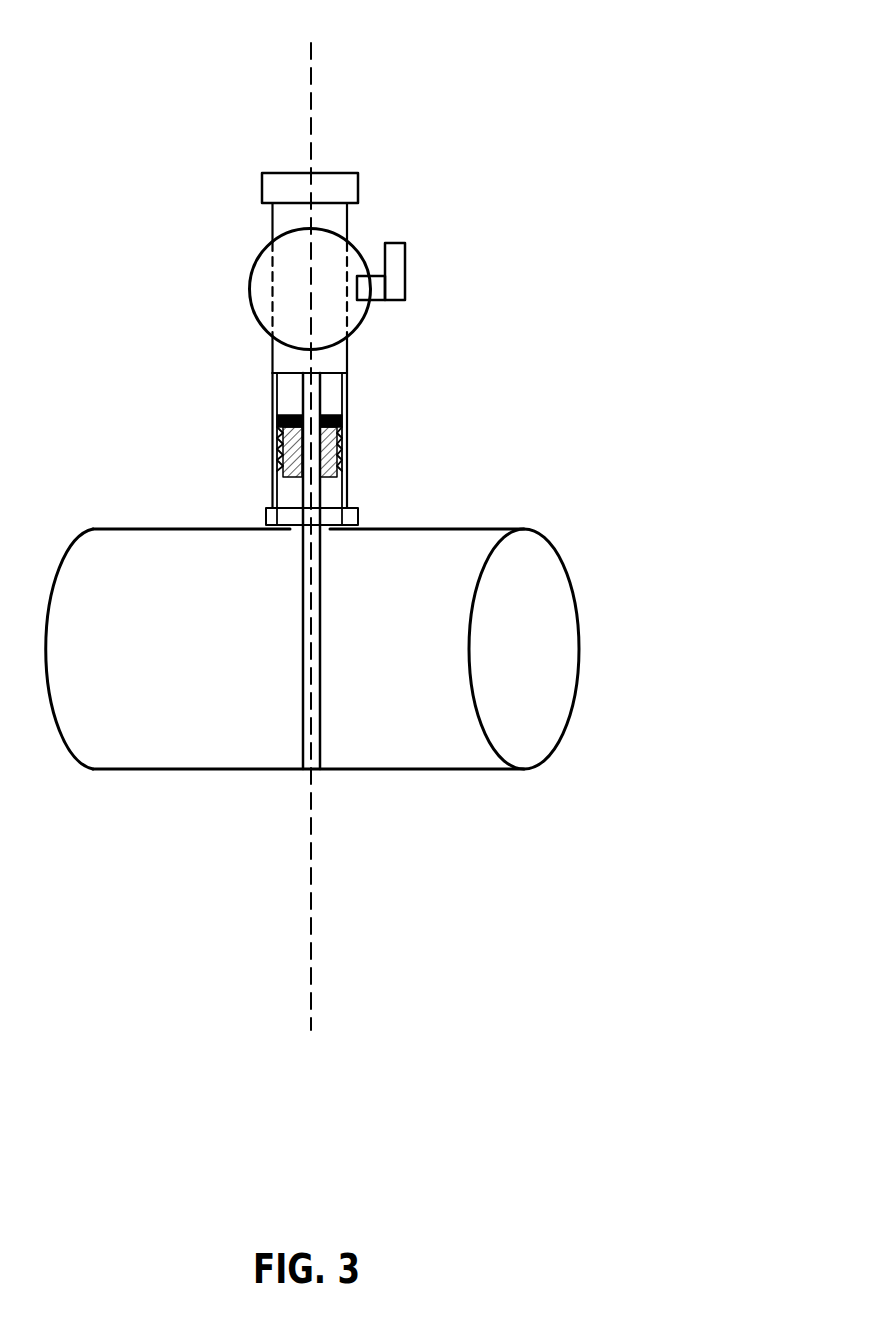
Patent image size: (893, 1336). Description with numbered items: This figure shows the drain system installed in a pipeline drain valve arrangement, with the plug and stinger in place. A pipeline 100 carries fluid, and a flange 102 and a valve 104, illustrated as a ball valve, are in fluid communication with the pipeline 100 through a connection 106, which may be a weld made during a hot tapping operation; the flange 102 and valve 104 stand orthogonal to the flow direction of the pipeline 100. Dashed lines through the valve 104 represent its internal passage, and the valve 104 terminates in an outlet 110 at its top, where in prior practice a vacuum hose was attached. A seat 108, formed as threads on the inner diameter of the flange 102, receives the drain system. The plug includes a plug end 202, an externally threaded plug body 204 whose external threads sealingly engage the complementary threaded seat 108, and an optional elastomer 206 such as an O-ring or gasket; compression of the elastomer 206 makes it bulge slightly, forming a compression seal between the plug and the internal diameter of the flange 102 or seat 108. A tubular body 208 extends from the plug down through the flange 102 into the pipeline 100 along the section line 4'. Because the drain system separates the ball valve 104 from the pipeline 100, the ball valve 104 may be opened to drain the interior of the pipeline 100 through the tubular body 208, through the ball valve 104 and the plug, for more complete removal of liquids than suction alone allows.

The section line 4' is at (374, 522).
The pipeline 100 is at (427, 735).
The flange 102 is at (267, 498).
The valve 104 is at (357, 254).
The connection 106 is at (358, 508).
The seat 108 is at (270, 465).
The outlet 110 is at (330, 177).
The plug end 202 is at (338, 455).
The externally threaded plug body 204 is at (337, 402).
The elastomer 206 is at (270, 420).
The tubular body 208 is at (320, 654).